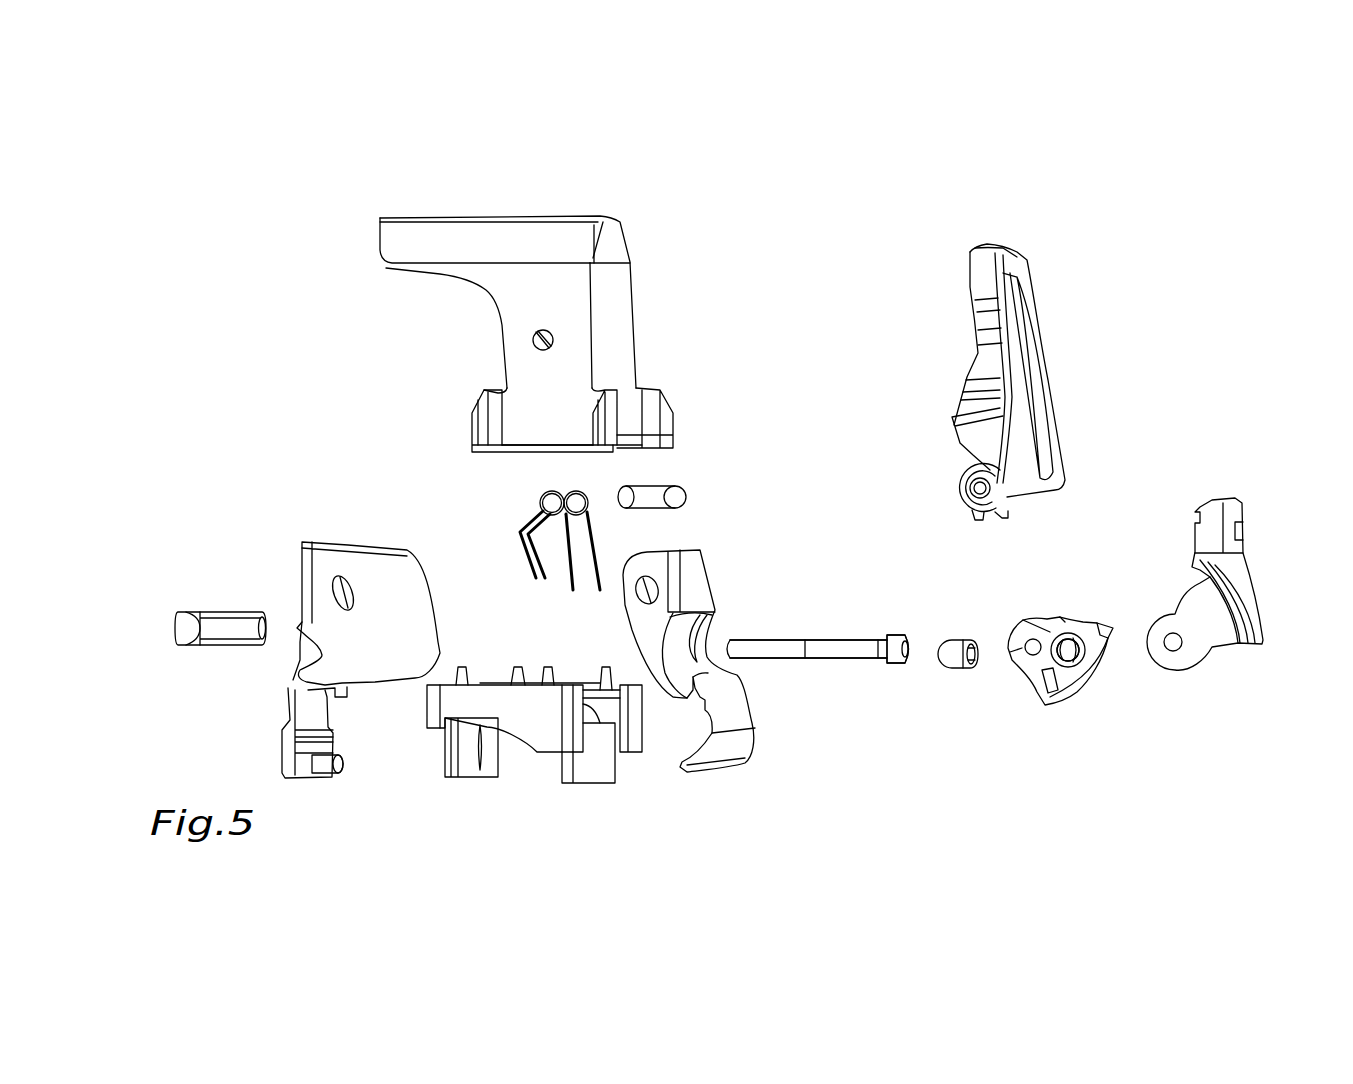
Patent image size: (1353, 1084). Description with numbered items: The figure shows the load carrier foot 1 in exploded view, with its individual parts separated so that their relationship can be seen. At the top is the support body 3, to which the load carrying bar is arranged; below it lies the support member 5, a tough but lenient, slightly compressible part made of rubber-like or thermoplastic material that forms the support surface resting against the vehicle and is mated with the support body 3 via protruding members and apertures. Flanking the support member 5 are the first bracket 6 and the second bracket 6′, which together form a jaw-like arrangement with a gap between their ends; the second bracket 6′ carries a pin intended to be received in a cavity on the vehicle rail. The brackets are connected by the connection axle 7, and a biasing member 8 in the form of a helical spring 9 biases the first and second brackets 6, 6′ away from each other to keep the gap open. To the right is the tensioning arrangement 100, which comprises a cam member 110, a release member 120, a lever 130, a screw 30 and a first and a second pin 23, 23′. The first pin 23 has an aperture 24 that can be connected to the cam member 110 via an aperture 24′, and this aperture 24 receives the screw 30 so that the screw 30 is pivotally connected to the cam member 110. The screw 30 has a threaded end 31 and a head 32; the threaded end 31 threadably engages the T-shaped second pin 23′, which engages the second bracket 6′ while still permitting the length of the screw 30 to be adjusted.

The load carrier foot 1 is at (1155, 183).
The support body 3 is at (655, 256).
The support member 5 is at (564, 649).
The first bracket 6 is at (714, 547).
The second bracket 6′ is at (377, 518).
The connection axle 7 is at (655, 489).
The biasing member 8 is at (506, 507).
The spring 9 is at (582, 540).
The first pin 23 is at (983, 624).
The second pin 23′ is at (218, 614).
The aperture 24 is at (978, 662).
The aperture 24′ is at (1080, 655).
The screw 30 is at (913, 612).
The threaded end 31 is at (767, 647).
The head 32 is at (890, 648).
The tensioning arrangement 100 is at (838, 386).
The cam member 110 is at (1082, 601).
The release member 120 is at (1164, 536).
The lever 130 is at (1072, 334).